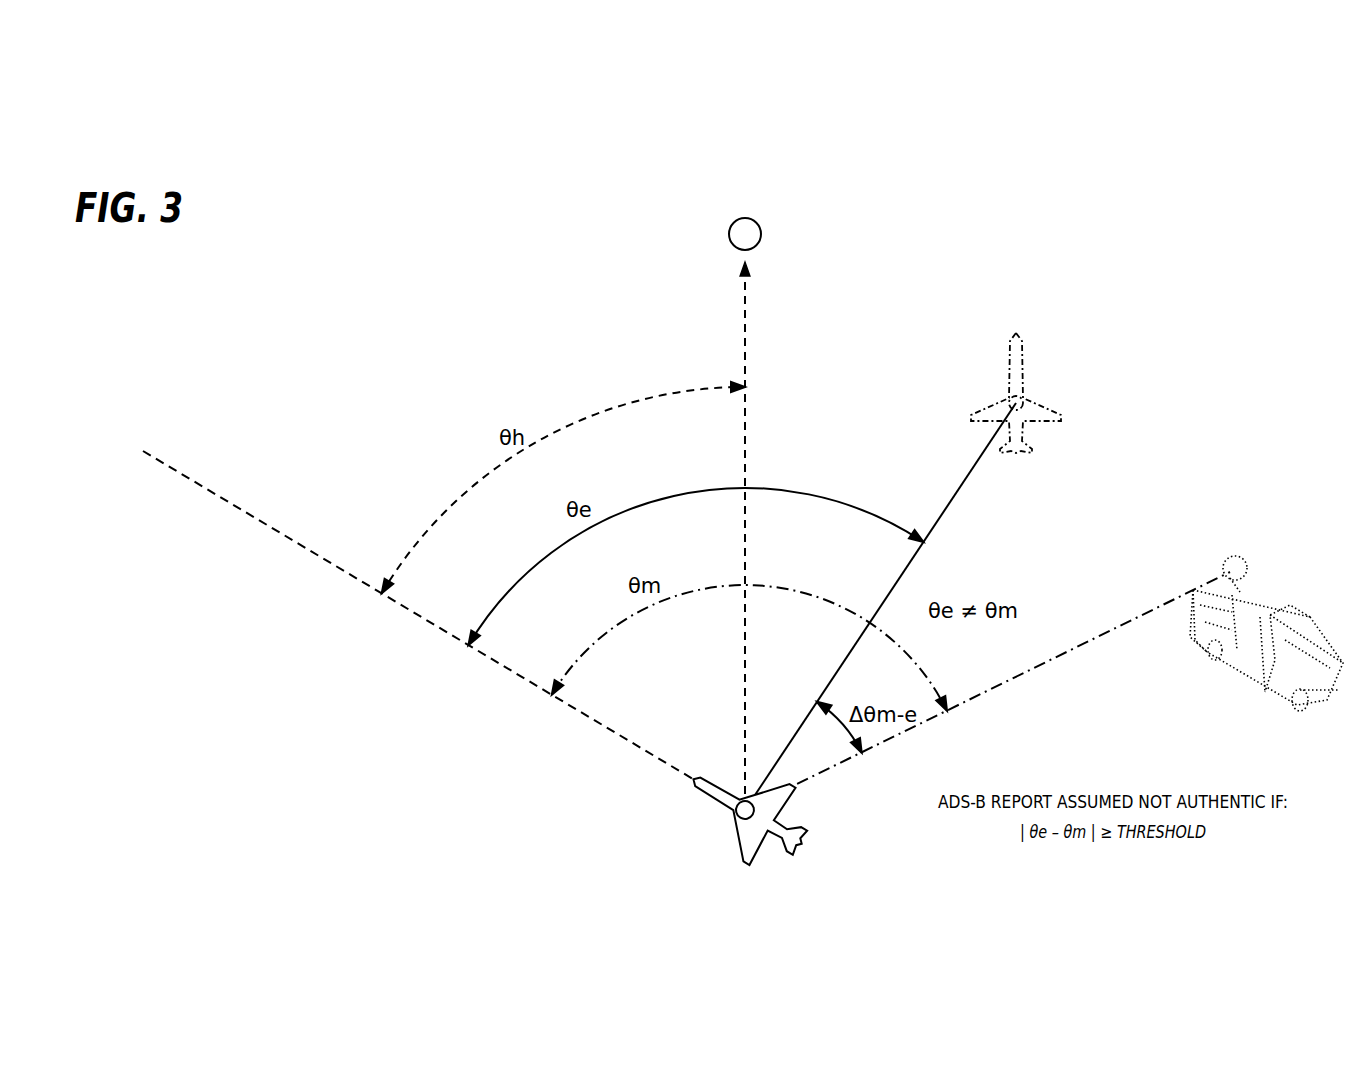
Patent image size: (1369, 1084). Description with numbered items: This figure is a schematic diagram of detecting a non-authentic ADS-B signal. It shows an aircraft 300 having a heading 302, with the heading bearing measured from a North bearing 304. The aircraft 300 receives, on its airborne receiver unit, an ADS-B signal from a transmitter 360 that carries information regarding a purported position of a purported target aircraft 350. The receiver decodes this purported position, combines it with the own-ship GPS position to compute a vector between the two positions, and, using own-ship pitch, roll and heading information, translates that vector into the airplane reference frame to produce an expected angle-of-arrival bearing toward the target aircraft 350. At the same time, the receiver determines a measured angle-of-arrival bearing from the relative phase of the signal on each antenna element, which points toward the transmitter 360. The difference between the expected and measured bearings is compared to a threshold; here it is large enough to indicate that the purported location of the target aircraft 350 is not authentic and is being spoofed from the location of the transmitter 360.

The aircraft 300 is at (745, 835).
The heading 302 is at (622, 741).
The North bearing 304 is at (745, 303).
The target aircraft 350 is at (1040, 402).
The transmitter 360 is at (1245, 652).